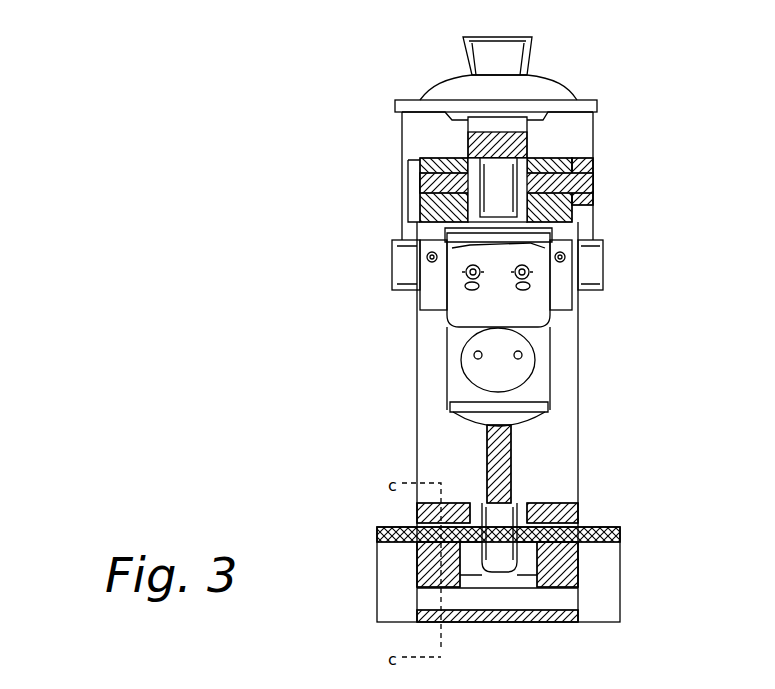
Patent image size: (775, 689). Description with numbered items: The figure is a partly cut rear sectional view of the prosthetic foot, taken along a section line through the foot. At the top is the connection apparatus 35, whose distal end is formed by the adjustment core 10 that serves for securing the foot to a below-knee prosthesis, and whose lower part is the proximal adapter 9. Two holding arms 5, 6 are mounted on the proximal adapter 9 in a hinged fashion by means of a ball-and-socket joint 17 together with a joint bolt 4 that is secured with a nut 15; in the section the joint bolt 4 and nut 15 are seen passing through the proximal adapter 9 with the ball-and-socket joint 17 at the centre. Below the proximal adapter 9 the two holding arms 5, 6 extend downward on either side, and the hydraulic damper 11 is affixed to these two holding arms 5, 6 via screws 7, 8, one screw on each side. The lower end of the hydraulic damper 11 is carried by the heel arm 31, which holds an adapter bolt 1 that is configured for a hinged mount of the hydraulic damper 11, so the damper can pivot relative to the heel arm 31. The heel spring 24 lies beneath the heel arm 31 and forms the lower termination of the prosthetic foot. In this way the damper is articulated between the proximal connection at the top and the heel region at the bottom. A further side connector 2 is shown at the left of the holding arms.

The adjustment core 10 is at (465, 46).
The connection apparatus 35 is at (556, 74).
The proximal adapter 9 is at (590, 110).
The joint bolt 4 is at (594, 177).
The nut 15 is at (412, 186).
The ball-and-socket joint 17 is at (594, 192).
The left side connector 2 is at (392, 245).
The screw 8 is at (600, 284).
The screw 7 is at (408, 279).
The holding arm 6 is at (582, 297).
The holding arm 5 is at (414, 299).
The hydraulic damper 11 is at (499, 368).
The heel arm 31 is at (580, 508).
The adapter bolt 1 is at (622, 540).
The heel spring 24 is at (505, 622).